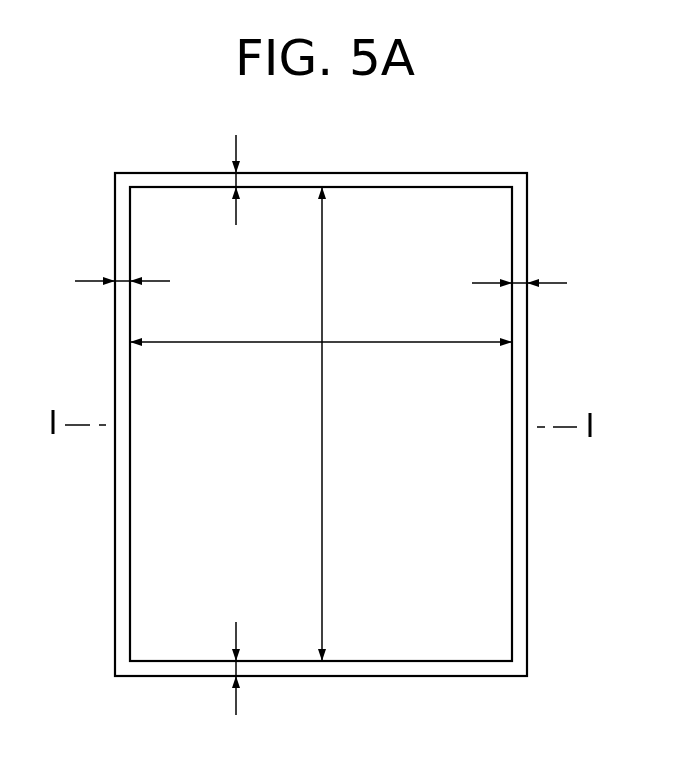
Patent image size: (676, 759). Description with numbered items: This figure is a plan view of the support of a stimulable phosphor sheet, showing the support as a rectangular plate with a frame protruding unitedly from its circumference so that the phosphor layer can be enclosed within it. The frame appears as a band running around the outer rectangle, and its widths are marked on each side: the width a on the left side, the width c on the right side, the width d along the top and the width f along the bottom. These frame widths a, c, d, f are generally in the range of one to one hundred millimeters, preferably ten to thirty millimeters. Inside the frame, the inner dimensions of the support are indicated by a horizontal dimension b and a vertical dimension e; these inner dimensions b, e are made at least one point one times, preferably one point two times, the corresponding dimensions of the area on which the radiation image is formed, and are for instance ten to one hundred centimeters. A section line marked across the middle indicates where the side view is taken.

The width of the frame a is at (122, 278).
The inner dimension of the support b is at (321, 357).
The width of the frame c is at (520, 280).
The width of the frame d is at (238, 180).
The inner dimension of the support e is at (330, 424).
The width of the frame f is at (238, 668).